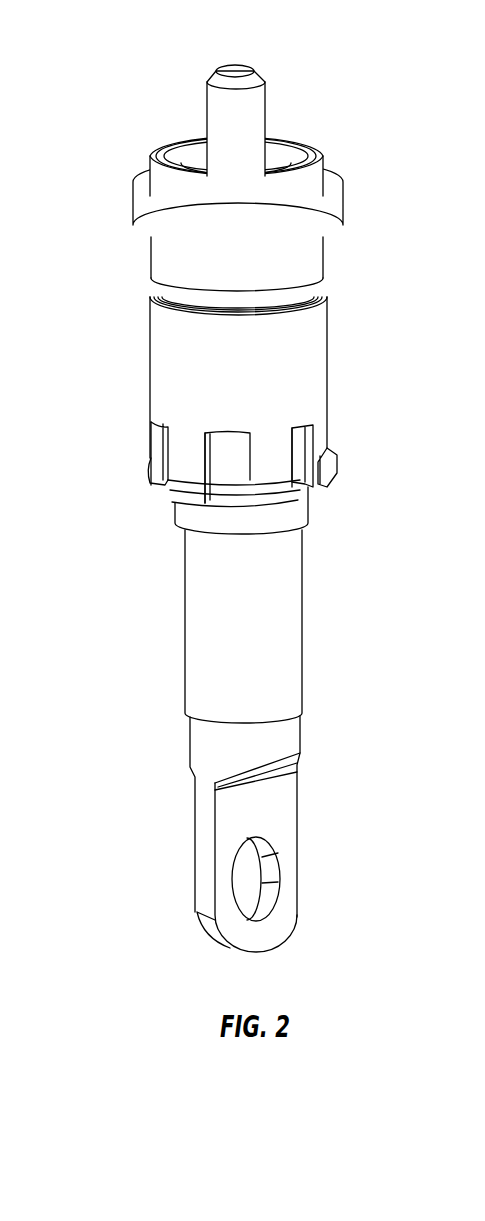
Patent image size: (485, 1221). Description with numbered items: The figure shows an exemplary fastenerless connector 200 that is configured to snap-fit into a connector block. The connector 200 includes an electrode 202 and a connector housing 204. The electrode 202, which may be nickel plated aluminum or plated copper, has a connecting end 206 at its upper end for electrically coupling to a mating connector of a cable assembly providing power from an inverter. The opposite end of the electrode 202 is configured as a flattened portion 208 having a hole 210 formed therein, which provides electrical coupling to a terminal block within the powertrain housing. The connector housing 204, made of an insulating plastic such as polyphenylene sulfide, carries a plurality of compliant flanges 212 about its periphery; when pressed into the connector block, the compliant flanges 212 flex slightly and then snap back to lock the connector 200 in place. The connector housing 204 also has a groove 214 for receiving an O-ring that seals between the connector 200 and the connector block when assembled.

The connector 200 is at (124, 44).
The electrode 202 is at (292, 635).
The connector housing 204 is at (318, 377).
The connecting end 206 is at (255, 110).
The flattened portion 208 is at (285, 802).
The hole 210 is at (274, 877).
The compliant flanges 212 is at (250, 485).
The groove 214 is at (160, 292).